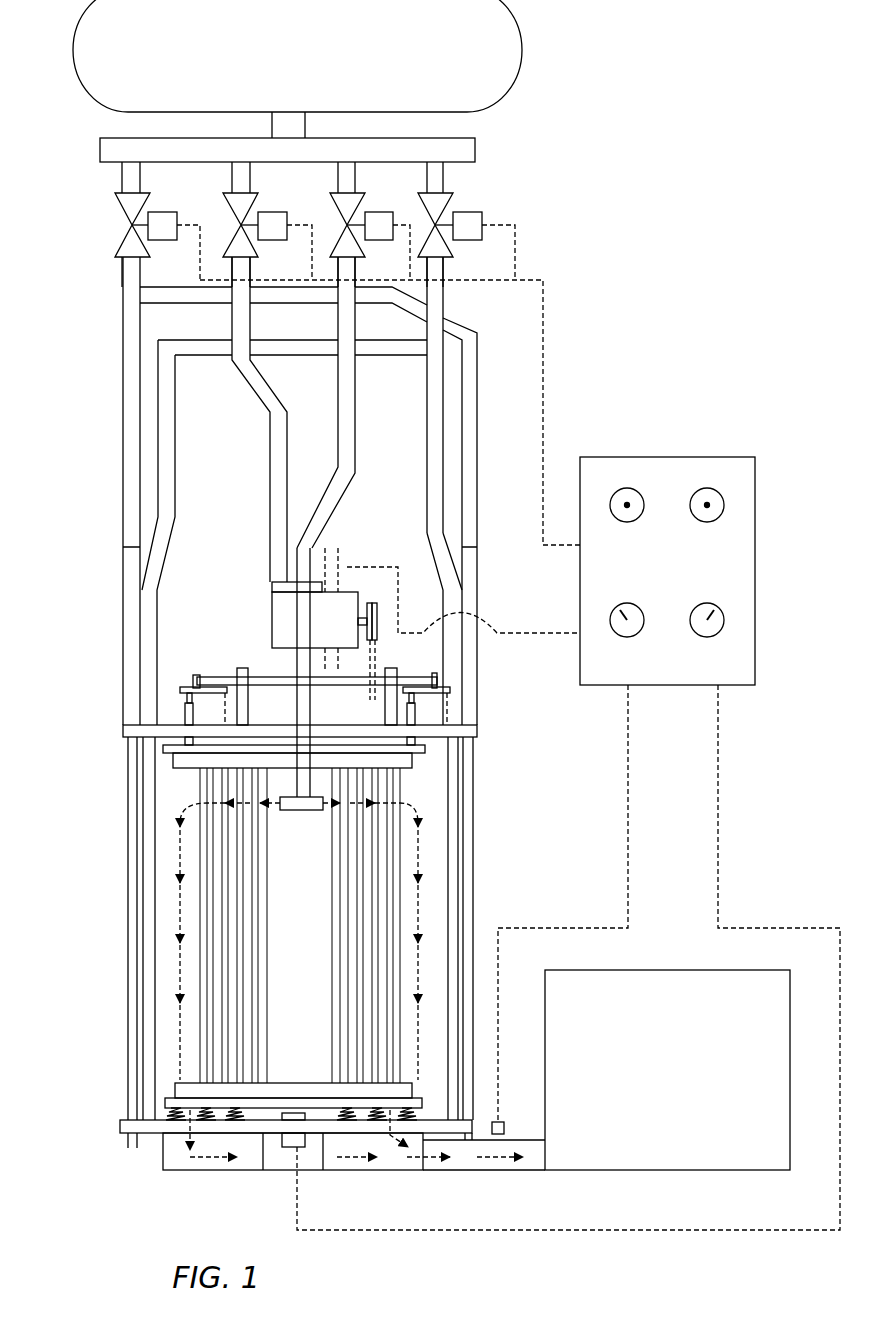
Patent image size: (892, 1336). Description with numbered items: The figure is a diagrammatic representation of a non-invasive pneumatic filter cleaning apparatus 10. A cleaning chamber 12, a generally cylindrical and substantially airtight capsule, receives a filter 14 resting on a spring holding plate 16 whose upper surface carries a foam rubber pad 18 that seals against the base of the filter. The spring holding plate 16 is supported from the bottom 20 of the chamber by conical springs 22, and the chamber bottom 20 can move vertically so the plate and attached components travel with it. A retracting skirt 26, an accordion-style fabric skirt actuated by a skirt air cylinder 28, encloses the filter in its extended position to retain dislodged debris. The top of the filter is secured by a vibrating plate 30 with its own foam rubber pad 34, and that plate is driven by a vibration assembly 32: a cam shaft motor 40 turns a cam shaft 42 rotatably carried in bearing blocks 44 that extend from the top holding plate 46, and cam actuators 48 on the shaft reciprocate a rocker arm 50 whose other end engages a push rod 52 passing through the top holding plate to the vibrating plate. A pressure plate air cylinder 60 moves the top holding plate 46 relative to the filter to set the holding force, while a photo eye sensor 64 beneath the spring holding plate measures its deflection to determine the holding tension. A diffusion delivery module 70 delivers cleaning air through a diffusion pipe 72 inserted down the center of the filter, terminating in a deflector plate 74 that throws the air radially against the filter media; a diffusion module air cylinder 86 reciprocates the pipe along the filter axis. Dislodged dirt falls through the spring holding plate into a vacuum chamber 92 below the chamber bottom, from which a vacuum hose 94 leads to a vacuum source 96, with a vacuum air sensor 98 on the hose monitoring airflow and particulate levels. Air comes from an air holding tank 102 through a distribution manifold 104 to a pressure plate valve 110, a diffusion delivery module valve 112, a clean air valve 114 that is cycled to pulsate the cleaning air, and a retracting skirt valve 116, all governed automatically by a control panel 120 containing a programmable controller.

The non-invasive pneumatic filter cleaning apparatus 10 is at (652, 140).
The cleaning chamber 12 is at (100, 893).
The filter 14 is at (343, 960).
The spring holding plate 16 is at (167, 1103).
The foam rubber pad 18 is at (175, 1090).
The bottom of the cleaning chamber 20 is at (152, 1127).
The conical springs 22 is at (210, 1123).
The retracting skirt 26 is at (458, 837).
The skirt air cylinder 28 is at (453, 622).
The vibrating plate 30 is at (425, 749).
The vibration assembly 32 is at (215, 553).
The foam rubber pad 34 is at (413, 763).
The cam shaft motor 40 is at (348, 605).
The cam shaft 42 is at (263, 673).
The bearing blocks 44 is at (240, 672).
The top holding plate 46 is at (127, 733).
The cam actuators 48 is at (195, 673).
The rocker arm 50 is at (180, 690).
The push rod 52 is at (185, 713).
The pressure plate air cylinder 60 is at (470, 713).
The photo eye sensor 64 is at (290, 1147).
The diffusion delivery module 70 is at (383, 490).
The diffusion pipe 72 is at (297, 785).
The deflector plate 74 is at (305, 815).
The diffusion module air cylinder 86 is at (270, 440).
The vacuum chamber 92 is at (350, 1168).
The vacuum hose 94 is at (462, 1175).
The vacuum source 96 is at (655, 1085).
The vacuum air sensor 98 is at (503, 1137).
The air holding tank 102 is at (278, 61).
The distribution manifold 104 is at (478, 150).
The pressure plate valve 110 is at (150, 205).
The diffusion delivery module valve 112 is at (258, 205).
The clean air valve 114 is at (365, 205).
The retracting skirt valve 116 is at (453, 205).
The control panel 120 is at (755, 517).